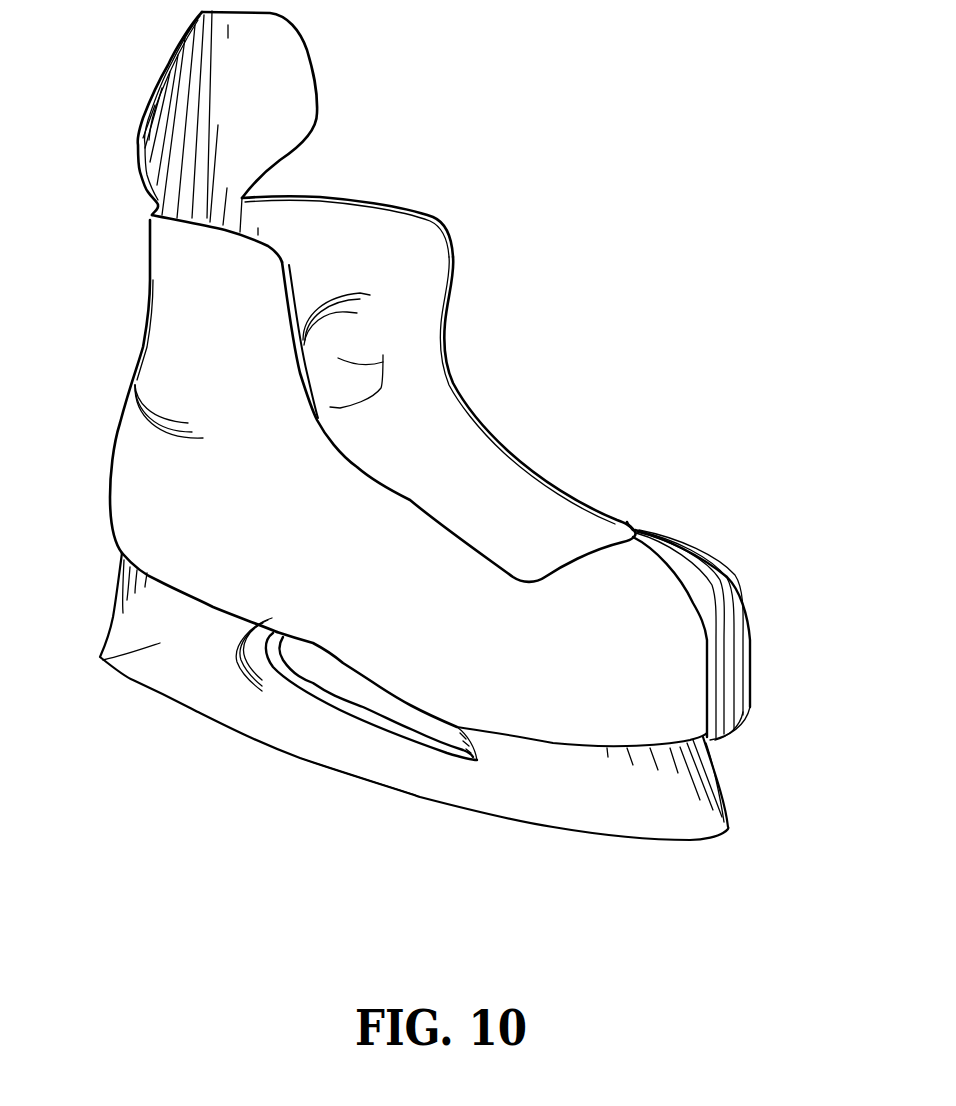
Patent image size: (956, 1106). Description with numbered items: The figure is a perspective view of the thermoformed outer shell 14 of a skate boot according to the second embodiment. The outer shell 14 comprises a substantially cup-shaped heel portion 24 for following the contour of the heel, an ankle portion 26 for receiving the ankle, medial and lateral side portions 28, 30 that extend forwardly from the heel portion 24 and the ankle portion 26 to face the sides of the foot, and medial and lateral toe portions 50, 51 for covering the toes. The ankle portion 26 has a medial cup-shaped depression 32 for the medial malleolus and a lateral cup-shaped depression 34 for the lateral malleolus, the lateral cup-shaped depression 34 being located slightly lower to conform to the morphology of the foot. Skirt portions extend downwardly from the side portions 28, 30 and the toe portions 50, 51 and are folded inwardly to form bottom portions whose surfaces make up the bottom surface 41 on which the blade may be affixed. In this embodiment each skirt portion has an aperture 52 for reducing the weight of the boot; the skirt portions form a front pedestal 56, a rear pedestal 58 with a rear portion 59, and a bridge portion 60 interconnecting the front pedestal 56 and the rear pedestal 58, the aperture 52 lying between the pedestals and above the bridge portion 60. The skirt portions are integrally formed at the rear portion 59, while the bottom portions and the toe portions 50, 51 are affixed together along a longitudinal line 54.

The outer shell 14 is at (373, 203).
The heel portion 24 is at (110, 465).
The ankle portion 26 is at (190, 287).
The medial side portion 28 is at (543, 470).
The lateral side portion 30 is at (317, 567).
The medial cup-shaped depression 32 is at (340, 358).
The lateral cup-shaped depression 34 is at (163, 380).
The bottom surface 41 is at (687, 840).
The medial toe portion 50 is at (697, 583).
The lateral toe portion 51 is at (640, 594).
The aperture 52 is at (352, 690).
The longitudinal line 54 is at (272, 673).
The front pedestal 56 is at (553, 807).
The rear pedestal 58 is at (100, 658).
The rear portion 59 is at (113, 601).
The bridge portion 60 is at (407, 767).